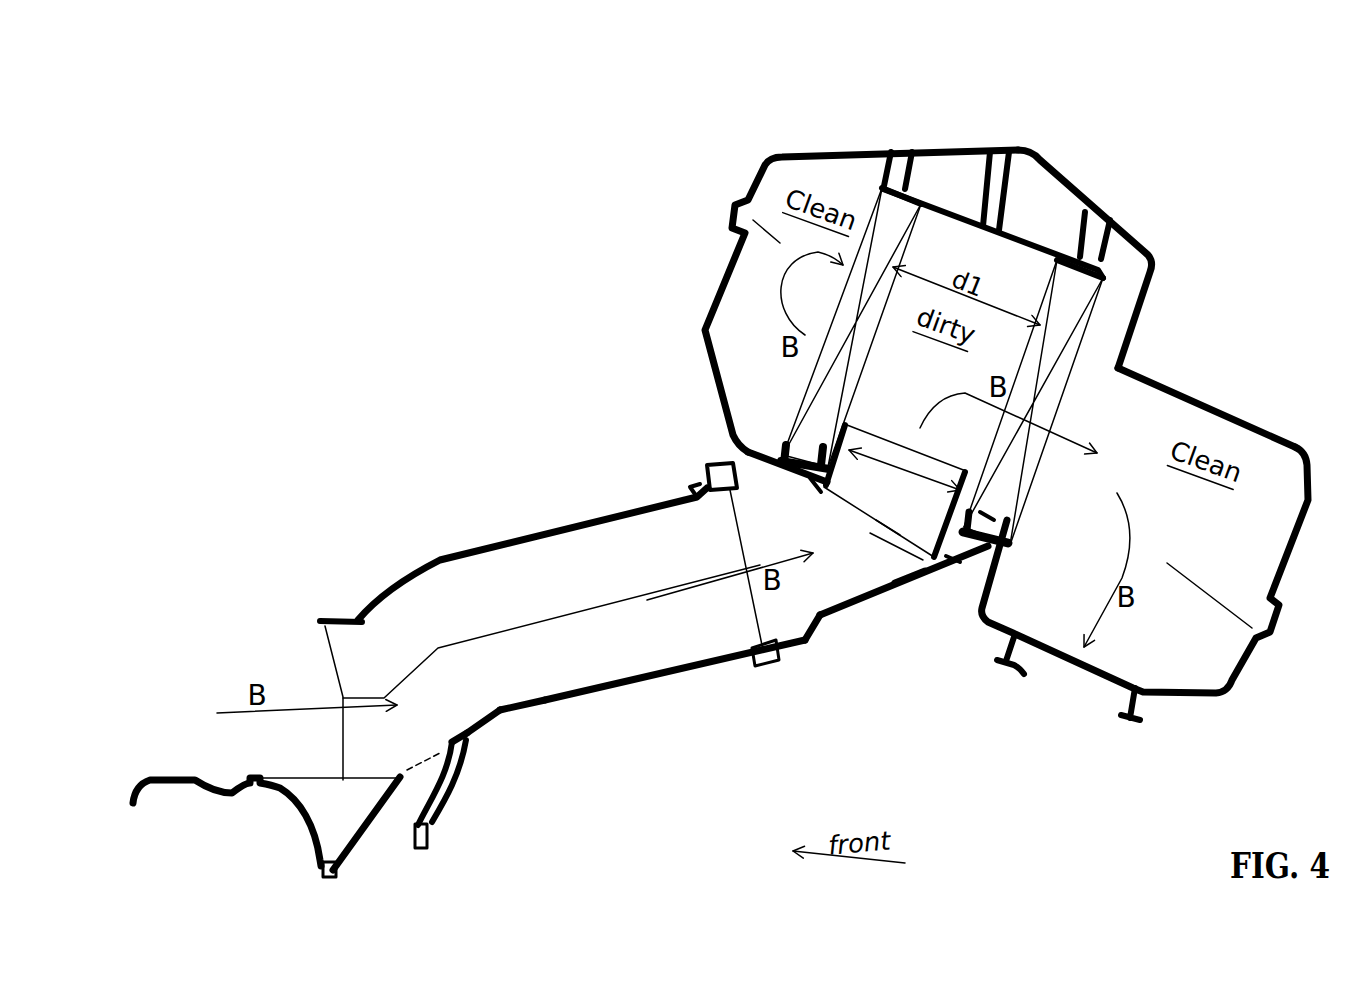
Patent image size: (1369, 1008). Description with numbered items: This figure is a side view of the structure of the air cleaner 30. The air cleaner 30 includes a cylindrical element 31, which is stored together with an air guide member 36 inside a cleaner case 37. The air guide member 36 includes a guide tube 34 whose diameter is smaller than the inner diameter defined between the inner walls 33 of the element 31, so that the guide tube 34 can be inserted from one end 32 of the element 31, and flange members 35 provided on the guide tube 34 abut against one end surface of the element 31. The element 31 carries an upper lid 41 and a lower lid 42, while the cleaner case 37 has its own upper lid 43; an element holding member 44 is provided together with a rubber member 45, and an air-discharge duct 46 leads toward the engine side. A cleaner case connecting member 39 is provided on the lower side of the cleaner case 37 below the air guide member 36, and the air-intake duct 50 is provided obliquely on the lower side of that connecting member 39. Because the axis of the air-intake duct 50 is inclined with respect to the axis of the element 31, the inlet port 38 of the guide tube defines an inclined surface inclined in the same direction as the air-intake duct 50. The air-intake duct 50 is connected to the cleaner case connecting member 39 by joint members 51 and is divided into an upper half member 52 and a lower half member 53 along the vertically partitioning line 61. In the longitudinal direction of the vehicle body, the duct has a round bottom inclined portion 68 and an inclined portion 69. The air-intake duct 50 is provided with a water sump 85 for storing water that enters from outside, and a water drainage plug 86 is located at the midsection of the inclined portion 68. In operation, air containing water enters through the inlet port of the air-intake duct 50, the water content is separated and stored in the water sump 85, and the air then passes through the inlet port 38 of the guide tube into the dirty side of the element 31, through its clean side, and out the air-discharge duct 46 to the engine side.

The air cleaner 30 is at (643, 163).
The cylindrical element 31 is at (1150, 291).
The one end of the element 32 is at (950, 498).
The inner walls of the element 33 is at (905, 247).
The guide tube 34 is at (968, 470).
The flange members 35 is at (815, 484).
The air guide member 36 is at (905, 557).
The cleaner case 37 is at (1193, 397).
The inlet port of the guide tube 38 is at (855, 345).
The cleaner case connecting member 39 is at (797, 637).
The upper lid of the element 41 is at (943, 207).
The lower lid of the element 42 is at (786, 446).
The upper lid of the cleaner case 43 is at (1050, 173).
The element holding member 44 is at (892, 180).
The rubber member 45 is at (692, 490).
The air-discharge duct 46 is at (1140, 710).
The air-intake duct 50 is at (567, 520).
The joint members 51 is at (728, 468).
The upper half member 52 is at (372, 600).
The lower half member 53 is at (563, 701).
The vertically partitioning line 61 is at (533, 701).
The round bottom inclined portion 68 is at (463, 741).
The inclined portion 69 is at (500, 714).
The water sump 85 is at (443, 821).
The water drainage plug 86 is at (430, 848).